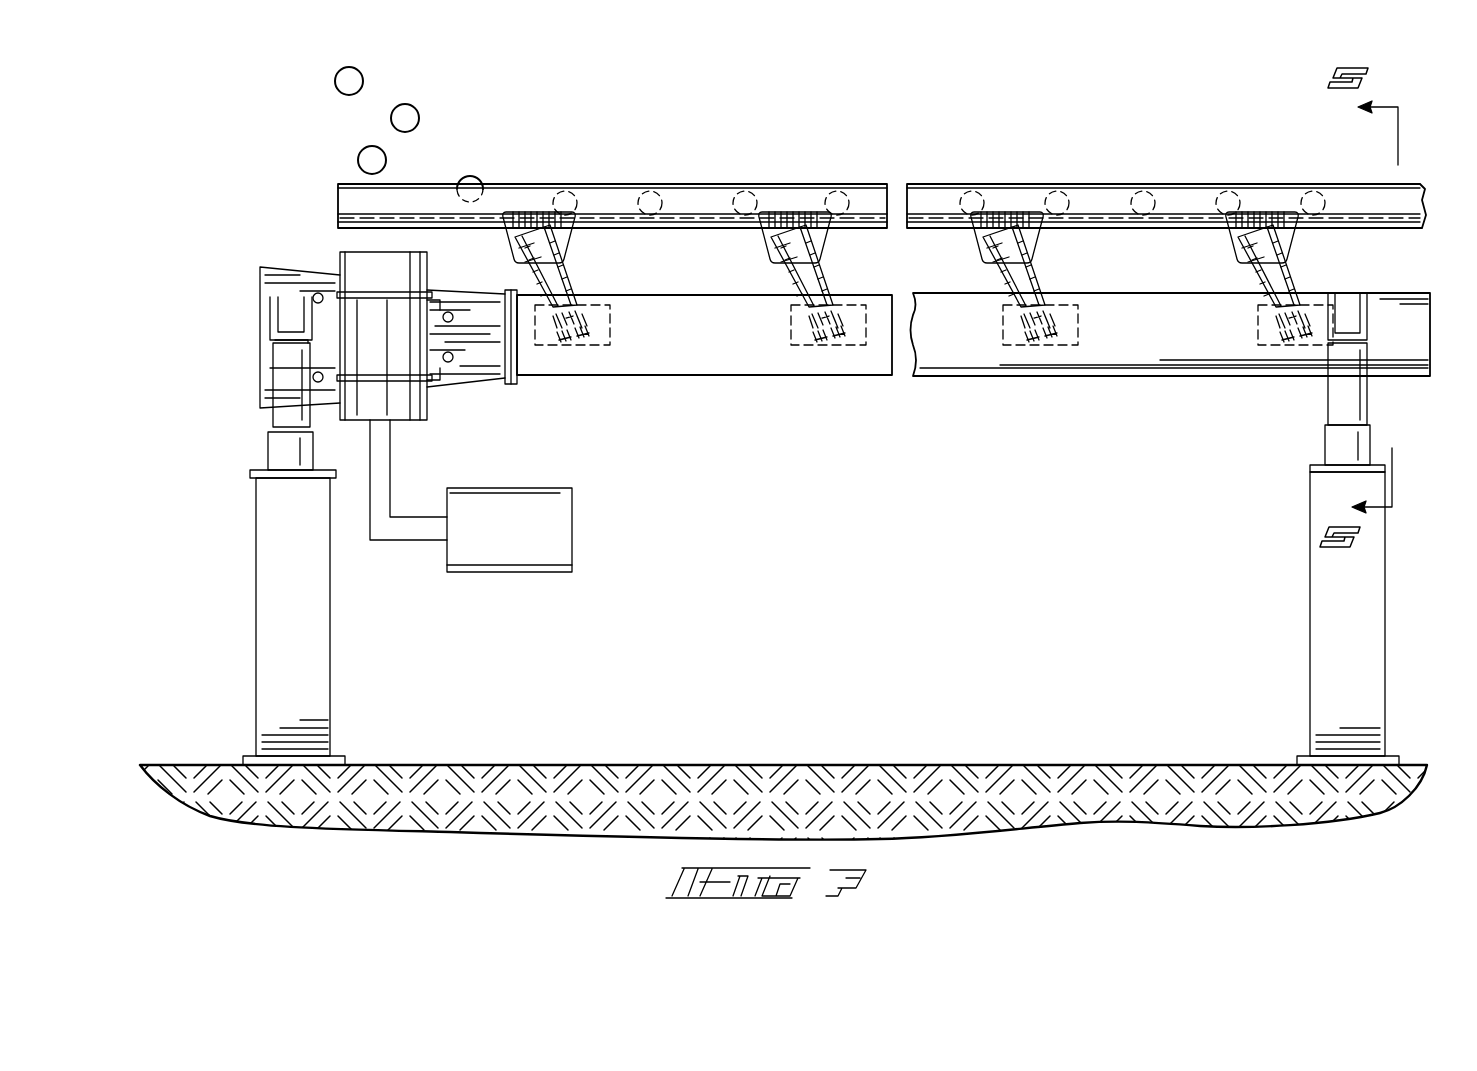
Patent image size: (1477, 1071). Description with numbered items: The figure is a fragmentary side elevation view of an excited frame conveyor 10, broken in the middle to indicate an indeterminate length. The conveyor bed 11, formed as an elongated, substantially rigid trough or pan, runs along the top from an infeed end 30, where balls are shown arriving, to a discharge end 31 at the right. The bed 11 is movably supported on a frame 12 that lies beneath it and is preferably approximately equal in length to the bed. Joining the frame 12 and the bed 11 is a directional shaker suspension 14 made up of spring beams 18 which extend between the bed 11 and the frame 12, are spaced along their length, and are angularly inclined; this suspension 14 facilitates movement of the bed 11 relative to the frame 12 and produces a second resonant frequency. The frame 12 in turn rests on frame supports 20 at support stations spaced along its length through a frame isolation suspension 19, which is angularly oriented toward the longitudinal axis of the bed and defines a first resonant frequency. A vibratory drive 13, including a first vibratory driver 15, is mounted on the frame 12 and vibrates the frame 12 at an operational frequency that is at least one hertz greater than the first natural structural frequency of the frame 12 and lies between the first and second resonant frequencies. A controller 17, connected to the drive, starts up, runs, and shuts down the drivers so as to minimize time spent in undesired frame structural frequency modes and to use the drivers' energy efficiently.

The excited frame conveyor 10 is at (1019, 101).
The conveyor bed 11 is at (1157, 184).
The frame 12 is at (1106, 366).
The vibratory drive 13 is at (400, 423).
The directional shaker suspension 14 is at (790, 276).
The first vibratory driver 15 is at (420, 405).
The controller 17 is at (572, 533).
The spring beams 18 is at (513, 258).
The frame isolation suspension 19 is at (268, 348).
The frame support 20 is at (330, 668).
The infeed end 30 is at (342, 186).
The discharge end 31 is at (1427, 194).